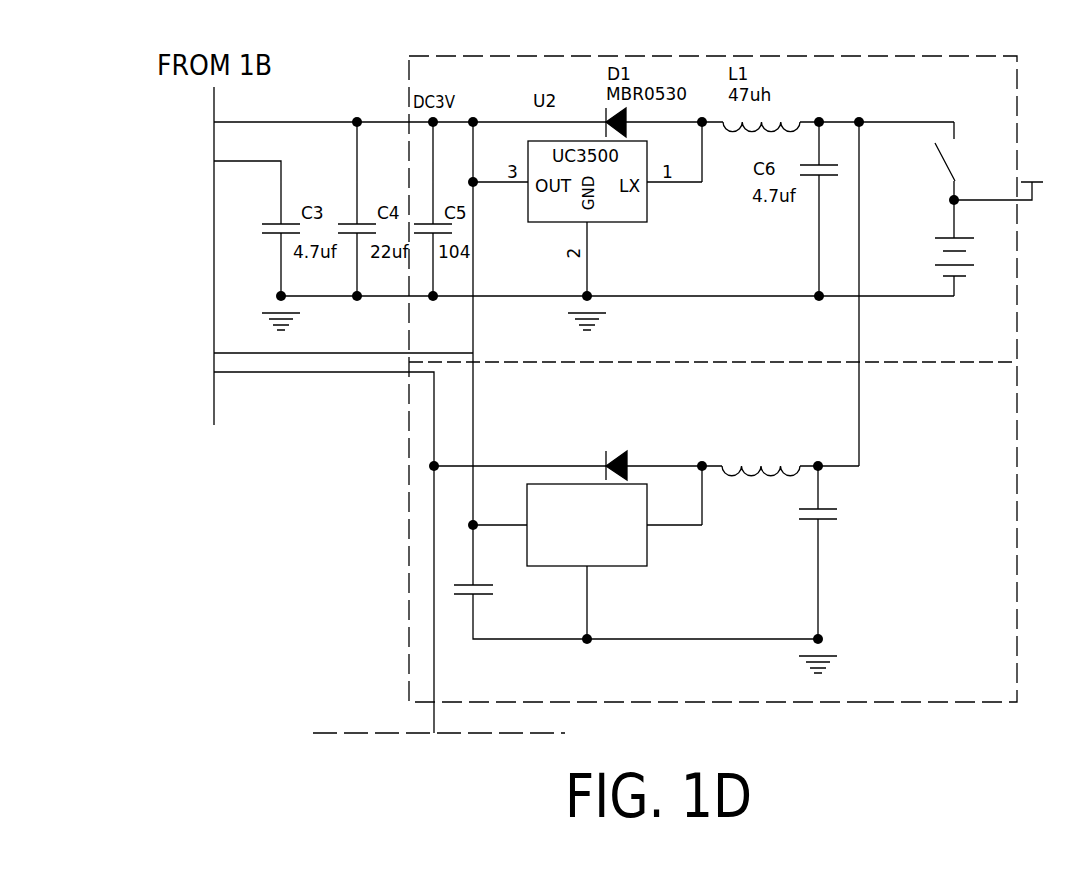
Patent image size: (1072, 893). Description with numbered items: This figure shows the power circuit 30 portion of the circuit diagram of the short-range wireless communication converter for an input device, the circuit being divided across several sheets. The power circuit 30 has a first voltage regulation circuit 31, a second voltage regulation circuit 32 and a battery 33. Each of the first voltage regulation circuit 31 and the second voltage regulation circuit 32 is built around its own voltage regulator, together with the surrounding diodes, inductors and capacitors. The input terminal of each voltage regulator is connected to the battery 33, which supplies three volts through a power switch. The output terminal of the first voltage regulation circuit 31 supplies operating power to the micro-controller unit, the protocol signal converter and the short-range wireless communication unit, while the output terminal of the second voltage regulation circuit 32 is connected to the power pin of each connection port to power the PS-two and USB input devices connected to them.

The power circuit 30 is at (409, 437).
The first voltage regulation circuit 31 is at (905, 56).
The second voltage regulation circuit 32 is at (409, 595).
The battery 33 is at (959, 207).